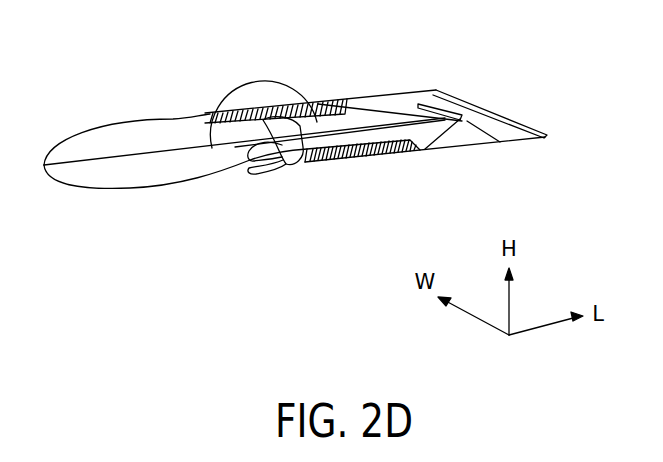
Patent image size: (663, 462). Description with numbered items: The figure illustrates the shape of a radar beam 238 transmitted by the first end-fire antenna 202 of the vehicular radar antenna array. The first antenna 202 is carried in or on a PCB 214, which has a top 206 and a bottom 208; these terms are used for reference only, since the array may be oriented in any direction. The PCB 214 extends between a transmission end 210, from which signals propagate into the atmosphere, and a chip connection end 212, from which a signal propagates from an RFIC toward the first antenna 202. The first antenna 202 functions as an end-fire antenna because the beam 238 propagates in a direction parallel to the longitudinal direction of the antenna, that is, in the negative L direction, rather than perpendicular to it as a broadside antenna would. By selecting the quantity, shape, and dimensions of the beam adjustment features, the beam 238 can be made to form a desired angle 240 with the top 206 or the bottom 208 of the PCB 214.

The first end-fire antenna 202 is at (363, 98).
The top 206 is at (396, 105).
The bottom 208 is at (383, 157).
The transmission end 210 is at (307, 160).
The chip connection end 212 is at (543, 133).
The PCB 214 is at (465, 148).
The beam 238 is at (135, 176).
The angle 240 is at (262, 100).